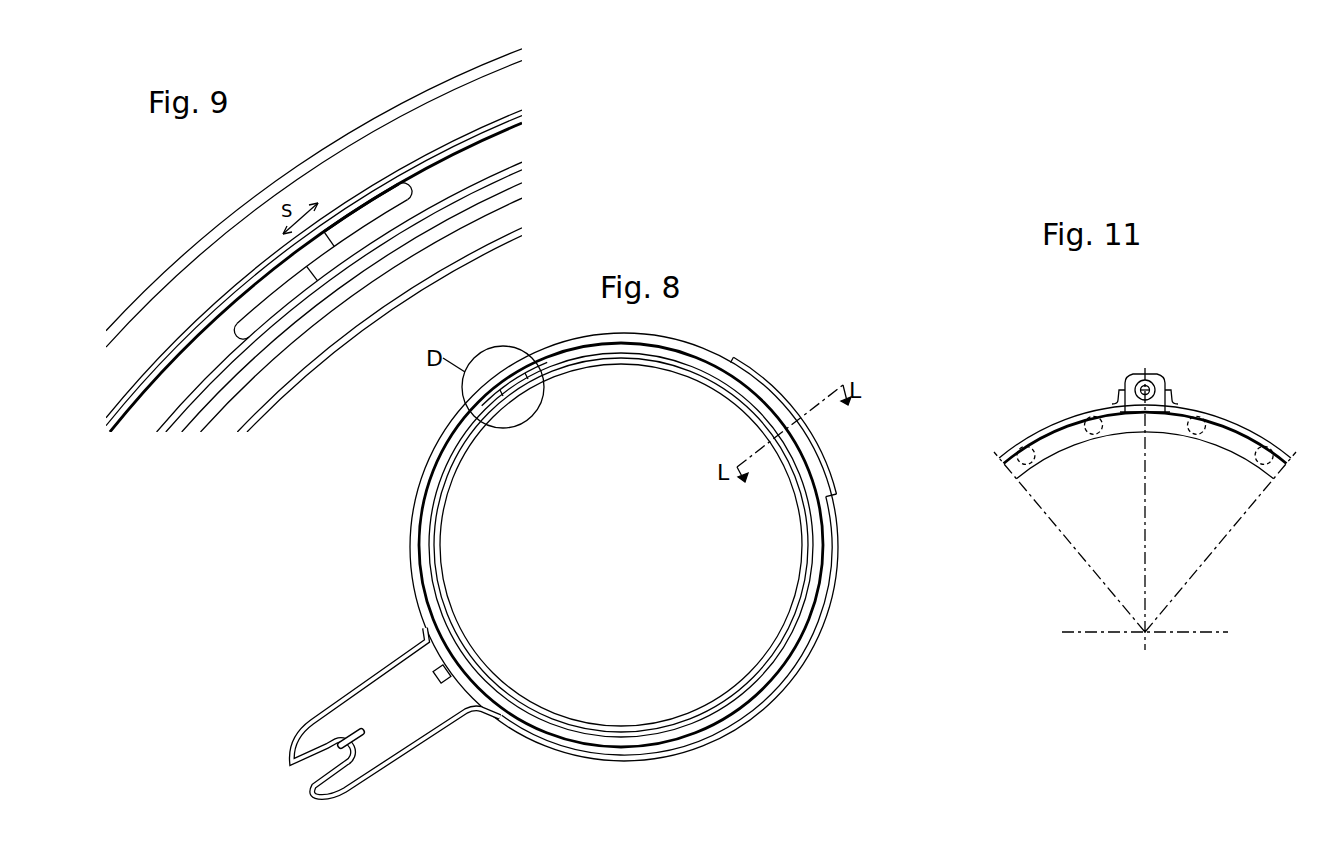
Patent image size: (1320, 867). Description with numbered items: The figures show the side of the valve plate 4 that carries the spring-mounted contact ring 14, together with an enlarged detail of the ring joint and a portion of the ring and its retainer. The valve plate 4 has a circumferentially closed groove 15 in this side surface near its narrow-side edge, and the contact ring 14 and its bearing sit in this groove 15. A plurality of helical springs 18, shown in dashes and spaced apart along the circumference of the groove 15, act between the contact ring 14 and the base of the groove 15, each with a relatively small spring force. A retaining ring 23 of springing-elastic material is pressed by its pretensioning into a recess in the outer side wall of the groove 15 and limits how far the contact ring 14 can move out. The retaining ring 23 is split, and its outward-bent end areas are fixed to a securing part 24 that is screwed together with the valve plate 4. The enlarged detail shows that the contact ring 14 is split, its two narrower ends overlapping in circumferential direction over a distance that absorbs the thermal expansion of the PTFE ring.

In FIG. 9, the valve plate 4 is at (287, 365).
In FIG. 8, the valve plate 4 is at (712, 668).
In FIG. 9, the contact ring 14 is at (433, 177).
In FIG. 8, the contact ring 14 is at (792, 648).
In FIG. 11, the contact ring 14 is at (1078, 430).
In FIG. 9, the groove 15 is at (270, 305).
In FIG. 11, the helical springs 18 is at (1260, 450).
In FIG. 9, the retaining ring 23 is at (364, 200).
In FIG. 11, the retaining ring 23 is at (1079, 413).
In FIG. 11, the securing part 24 is at (1155, 372).